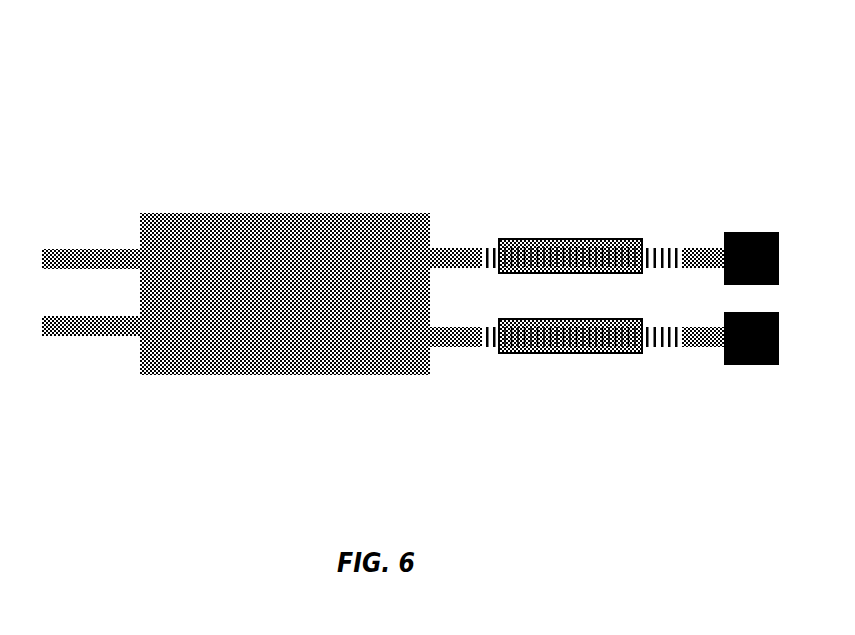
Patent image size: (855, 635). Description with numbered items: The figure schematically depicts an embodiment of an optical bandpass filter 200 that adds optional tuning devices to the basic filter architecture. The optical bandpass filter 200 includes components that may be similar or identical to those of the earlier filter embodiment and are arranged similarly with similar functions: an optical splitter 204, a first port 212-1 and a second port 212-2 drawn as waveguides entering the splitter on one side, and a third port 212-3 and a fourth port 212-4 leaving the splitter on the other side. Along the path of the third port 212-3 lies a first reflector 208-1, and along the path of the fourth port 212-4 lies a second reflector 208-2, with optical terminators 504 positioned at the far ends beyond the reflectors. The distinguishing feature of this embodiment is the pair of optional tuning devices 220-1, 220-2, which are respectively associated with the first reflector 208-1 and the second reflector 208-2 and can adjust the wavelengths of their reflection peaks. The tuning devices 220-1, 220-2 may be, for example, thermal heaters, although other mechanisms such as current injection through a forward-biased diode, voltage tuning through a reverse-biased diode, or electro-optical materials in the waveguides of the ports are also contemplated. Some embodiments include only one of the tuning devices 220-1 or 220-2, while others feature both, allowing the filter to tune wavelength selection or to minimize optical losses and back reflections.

The optical bandpass filter 200 is at (183, 106).
The optical splitter 204 is at (320, 228).
The first port 212-1 is at (107, 257).
The second port 212-2 is at (98, 333).
The third port 212-3 is at (447, 250).
The fourth port 212-4 is at (448, 340).
The tuning device 220-1 is at (578, 243).
The tuning device 220-2 is at (583, 352).
The first reflector 208-1 is at (652, 247).
The second reflector 208-2 is at (657, 347).
The optical terminator 504 is at (752, 232).